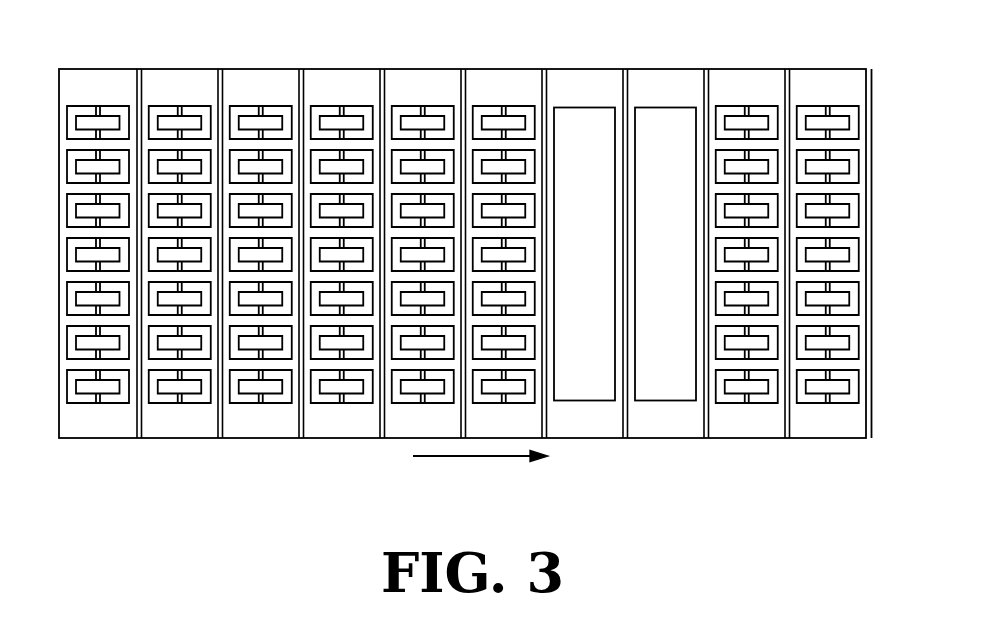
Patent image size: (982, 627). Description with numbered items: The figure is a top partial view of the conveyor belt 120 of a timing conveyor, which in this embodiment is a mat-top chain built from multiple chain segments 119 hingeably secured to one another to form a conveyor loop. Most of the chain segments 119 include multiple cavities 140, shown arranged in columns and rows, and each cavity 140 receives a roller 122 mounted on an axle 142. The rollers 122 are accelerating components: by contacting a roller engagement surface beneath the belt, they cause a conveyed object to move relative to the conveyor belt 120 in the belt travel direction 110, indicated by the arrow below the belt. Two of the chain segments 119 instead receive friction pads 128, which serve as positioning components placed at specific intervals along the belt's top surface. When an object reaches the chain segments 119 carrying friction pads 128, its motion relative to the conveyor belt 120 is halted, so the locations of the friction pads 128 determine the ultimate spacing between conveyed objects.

The chain segments 119 is at (334, 82).
The conveyor belt 120 is at (570, 68).
The friction pads 128 is at (657, 128).
The cavities 140 is at (126, 392).
The rollers 122 is at (193, 388).
The axles 142 is at (335, 398).
The belt travel direction 110 is at (440, 460).